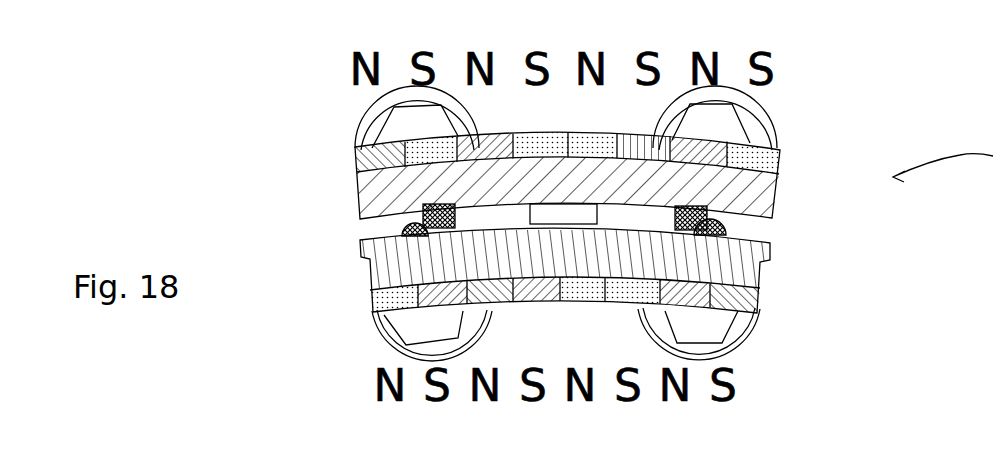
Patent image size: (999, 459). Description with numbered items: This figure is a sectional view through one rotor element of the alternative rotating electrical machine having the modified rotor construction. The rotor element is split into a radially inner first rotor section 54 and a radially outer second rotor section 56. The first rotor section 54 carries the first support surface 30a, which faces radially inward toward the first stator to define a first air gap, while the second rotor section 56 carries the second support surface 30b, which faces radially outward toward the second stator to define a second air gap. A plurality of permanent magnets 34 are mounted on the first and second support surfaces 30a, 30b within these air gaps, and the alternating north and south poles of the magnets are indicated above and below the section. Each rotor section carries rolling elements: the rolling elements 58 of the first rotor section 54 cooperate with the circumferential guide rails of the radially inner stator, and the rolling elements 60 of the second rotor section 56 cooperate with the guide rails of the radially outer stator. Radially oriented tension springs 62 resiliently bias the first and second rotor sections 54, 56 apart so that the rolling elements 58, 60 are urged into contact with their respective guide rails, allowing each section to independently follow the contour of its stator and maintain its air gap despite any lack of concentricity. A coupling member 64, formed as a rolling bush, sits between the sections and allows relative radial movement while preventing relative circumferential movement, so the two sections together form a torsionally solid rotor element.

The first support surface 30a is at (545, 302).
The second support surface 30b is at (730, 155).
The permanent magnets 34 is at (602, 140).
The first rotor section 54 is at (370, 272).
The second rotor section 56 is at (360, 199).
The rolling elements 58 is at (393, 340).
The rolling elements 60 is at (362, 130).
The tension springs 62 is at (360, 222).
The coupling member 64 is at (600, 212).